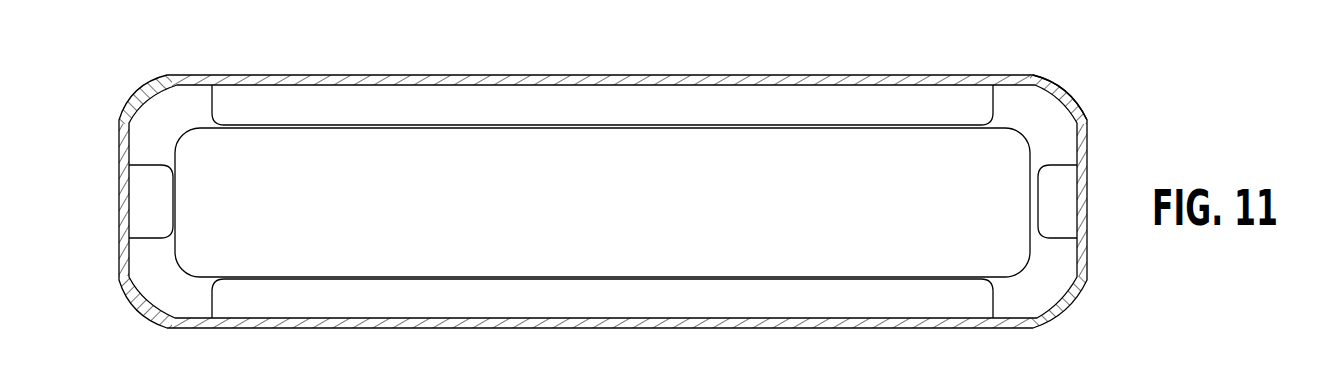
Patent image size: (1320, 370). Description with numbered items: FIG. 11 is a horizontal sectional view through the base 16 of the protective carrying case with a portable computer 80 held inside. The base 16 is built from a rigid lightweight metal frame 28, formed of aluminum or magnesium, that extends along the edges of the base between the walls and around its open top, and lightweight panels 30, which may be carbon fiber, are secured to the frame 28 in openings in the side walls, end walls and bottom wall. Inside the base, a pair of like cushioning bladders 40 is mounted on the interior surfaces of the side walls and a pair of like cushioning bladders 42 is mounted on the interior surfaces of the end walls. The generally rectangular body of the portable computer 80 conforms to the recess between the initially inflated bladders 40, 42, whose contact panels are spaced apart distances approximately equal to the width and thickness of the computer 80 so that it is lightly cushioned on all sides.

The base 16 is at (1072, 315).
The metal frame 28 is at (1060, 90).
The panels 30 is at (447, 77).
The cushioning bladders 40 is at (205, 95).
The cushioning bladders 42 is at (148, 163).
The portable computer 80 is at (562, 216).